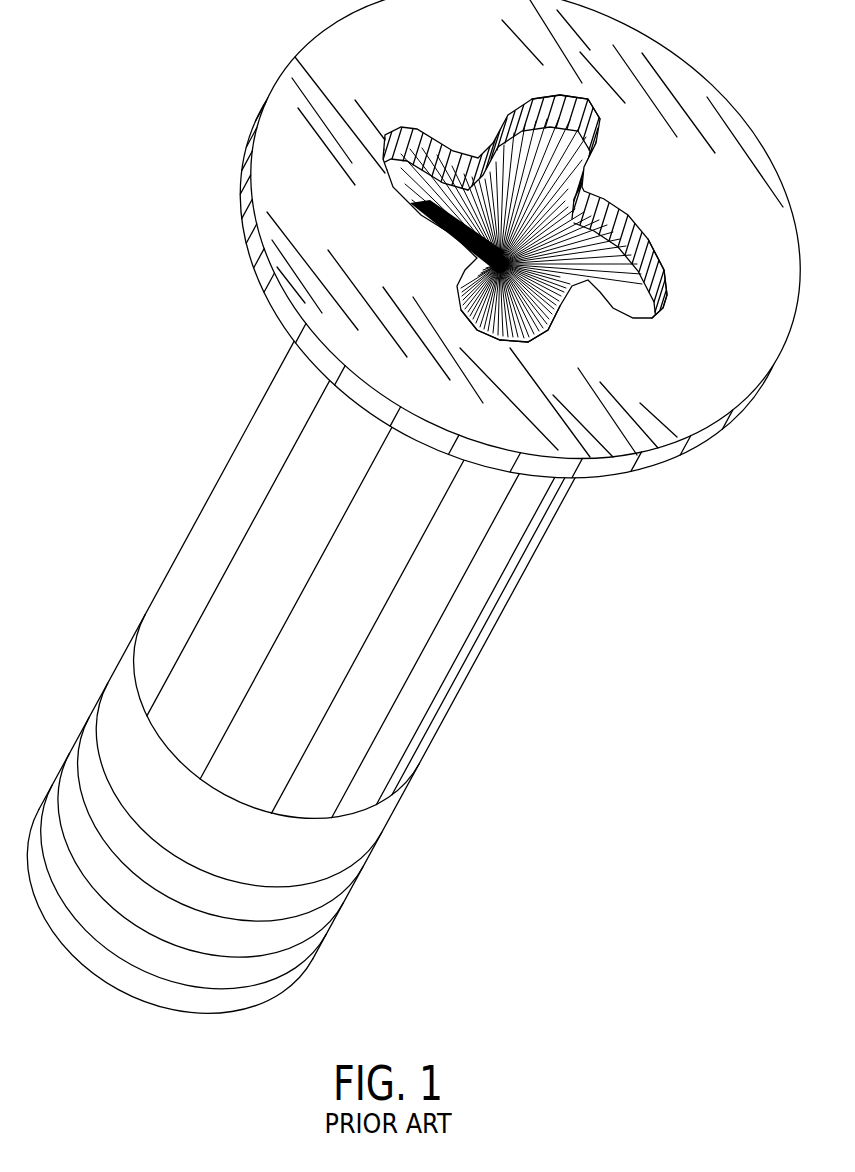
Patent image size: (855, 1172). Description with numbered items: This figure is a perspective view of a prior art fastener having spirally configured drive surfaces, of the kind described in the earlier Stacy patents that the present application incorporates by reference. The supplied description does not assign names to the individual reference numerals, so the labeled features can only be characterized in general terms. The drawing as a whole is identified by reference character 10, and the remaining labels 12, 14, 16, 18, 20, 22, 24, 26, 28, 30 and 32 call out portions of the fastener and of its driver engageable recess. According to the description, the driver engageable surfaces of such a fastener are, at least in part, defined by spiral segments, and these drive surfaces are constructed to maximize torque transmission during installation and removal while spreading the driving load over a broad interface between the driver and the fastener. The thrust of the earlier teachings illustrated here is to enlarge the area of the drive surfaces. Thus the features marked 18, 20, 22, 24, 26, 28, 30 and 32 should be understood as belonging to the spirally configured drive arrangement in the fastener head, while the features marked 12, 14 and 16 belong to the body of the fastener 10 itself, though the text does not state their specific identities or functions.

The threaded fastener 10 is at (604, 553).
The shank 12 is at (153, 607).
The threads 14 is at (348, 882).
The head 16 is at (262, 143).
The drive recess 18 is at (457, 253).
The central conical portion 20 is at (517, 187).
The radial wings 22 is at (568, 131).
The wing end wall 24 is at (433, 137).
The wing side wall 26 is at (540, 113).
The wing floor 28 is at (547, 325).
The wing outer end 30 is at (585, 110).
The wall inner edge 32 is at (478, 158).